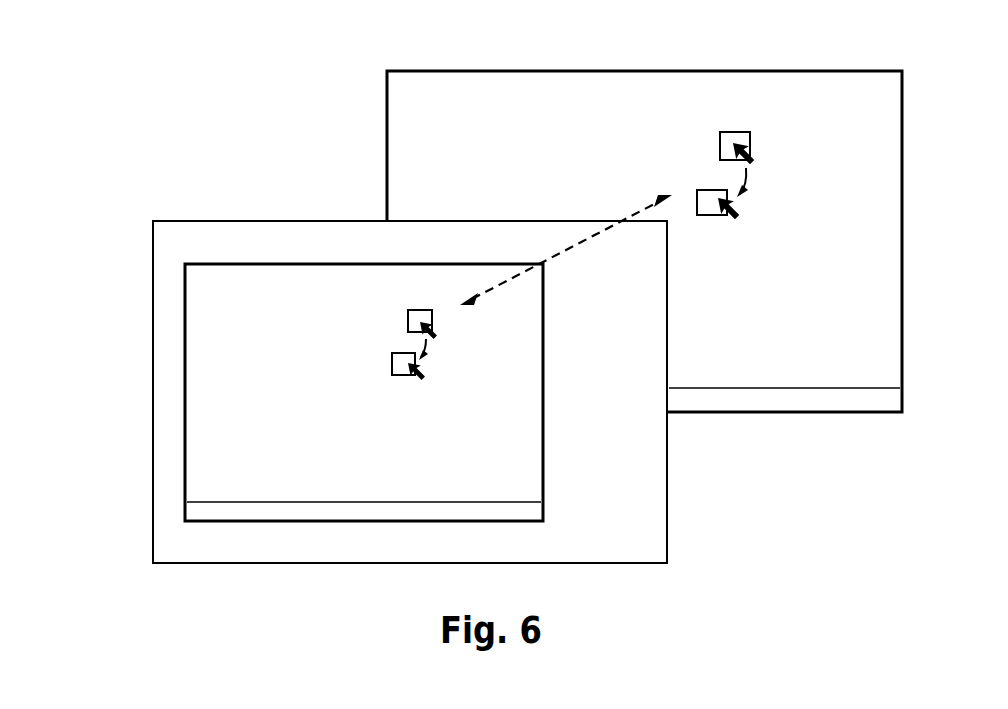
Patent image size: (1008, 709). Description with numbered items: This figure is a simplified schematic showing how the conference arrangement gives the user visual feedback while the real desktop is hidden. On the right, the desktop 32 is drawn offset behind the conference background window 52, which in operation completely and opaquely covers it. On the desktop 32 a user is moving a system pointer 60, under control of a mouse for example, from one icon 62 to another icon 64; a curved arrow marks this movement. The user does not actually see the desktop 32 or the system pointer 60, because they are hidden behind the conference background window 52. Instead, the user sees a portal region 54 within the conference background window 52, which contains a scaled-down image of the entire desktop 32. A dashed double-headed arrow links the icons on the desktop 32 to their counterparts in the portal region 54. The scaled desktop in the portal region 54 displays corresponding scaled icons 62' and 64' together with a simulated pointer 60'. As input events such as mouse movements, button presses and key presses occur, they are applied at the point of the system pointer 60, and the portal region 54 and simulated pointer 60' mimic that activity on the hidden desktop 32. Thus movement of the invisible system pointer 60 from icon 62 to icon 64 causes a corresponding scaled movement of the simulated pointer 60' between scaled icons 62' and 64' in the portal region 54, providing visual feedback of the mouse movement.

The desktop 32 is at (441, 71).
The conference background window 52 is at (259, 221).
The portal region 54 is at (185, 330).
The system pointer 60 is at (780, 148).
The icon 62 is at (707, 130).
The icon 64 is at (696, 186).
The simulated pointer 60' is at (386, 364).
The scaled icon 62' is at (392, 307).
The scaled icon 64' is at (379, 350).